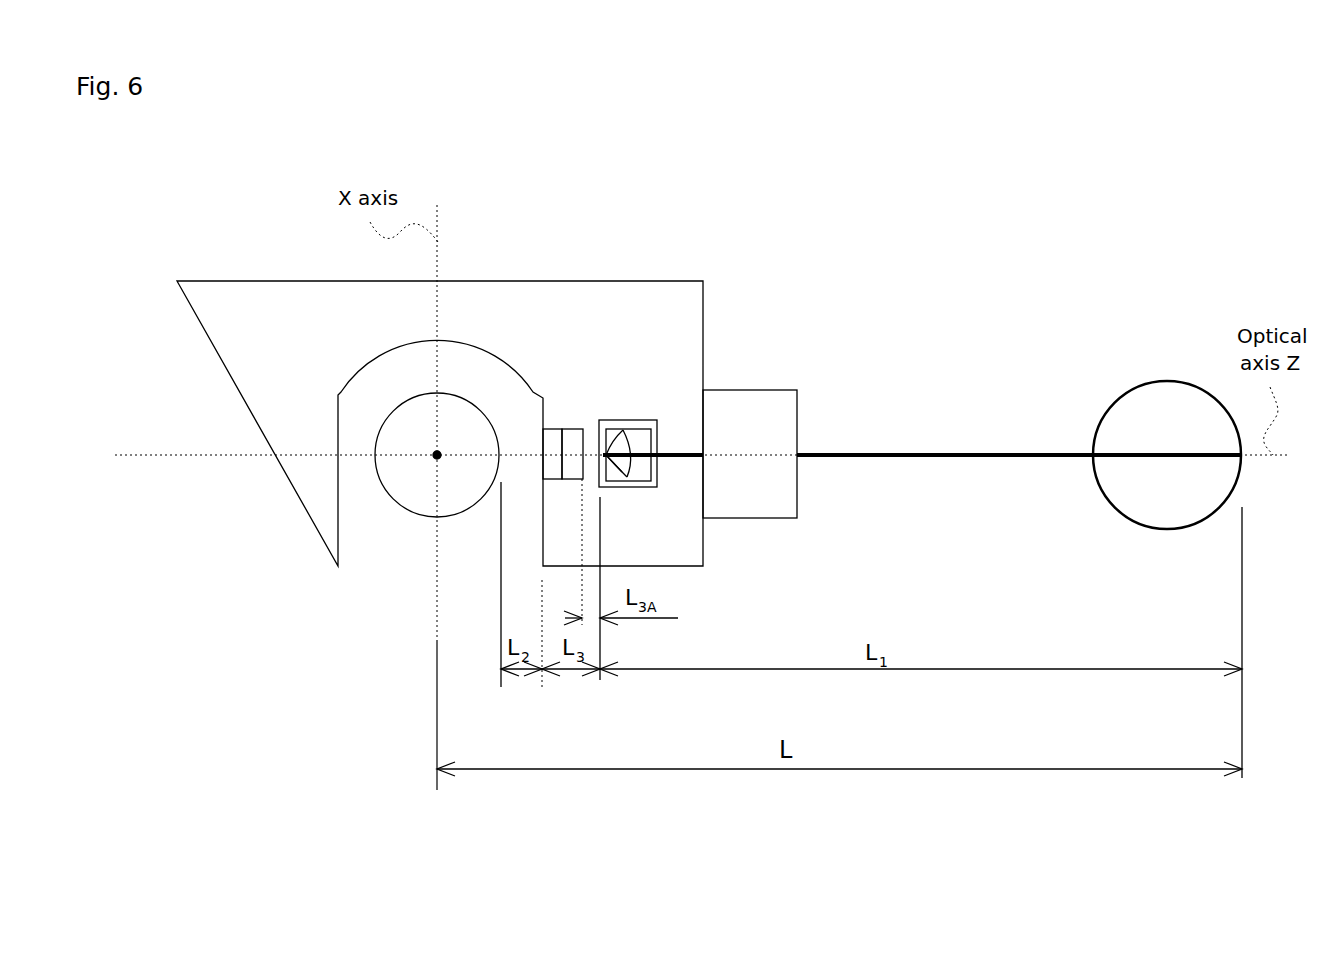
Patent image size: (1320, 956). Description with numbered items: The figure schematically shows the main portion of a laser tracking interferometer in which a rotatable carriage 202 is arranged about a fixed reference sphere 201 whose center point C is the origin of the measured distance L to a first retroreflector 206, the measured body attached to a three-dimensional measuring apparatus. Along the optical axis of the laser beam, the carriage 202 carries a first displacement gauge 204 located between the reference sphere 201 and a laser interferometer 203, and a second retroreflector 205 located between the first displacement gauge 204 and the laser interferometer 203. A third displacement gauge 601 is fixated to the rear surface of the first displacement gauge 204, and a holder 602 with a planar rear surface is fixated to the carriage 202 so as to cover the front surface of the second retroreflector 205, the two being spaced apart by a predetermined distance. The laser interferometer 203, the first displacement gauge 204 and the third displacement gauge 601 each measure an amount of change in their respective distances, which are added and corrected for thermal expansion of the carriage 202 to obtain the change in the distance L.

The reference sphere 201 is at (398, 443).
The carriage 202 is at (298, 298).
The laser interferometer 203 is at (773, 433).
The first displacement gauge 204 is at (553, 440).
The second retroreflector 205 is at (653, 445).
The first retroreflector 206 is at (1165, 415).
The third displacement gauge 601 is at (580, 437).
The holder 602 is at (645, 488).